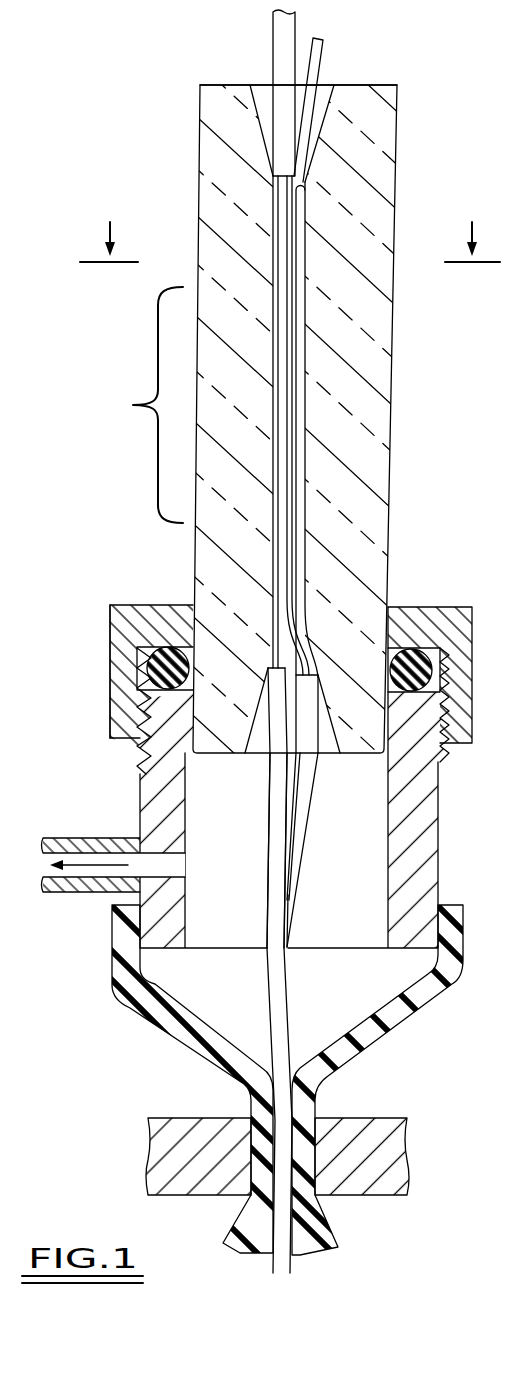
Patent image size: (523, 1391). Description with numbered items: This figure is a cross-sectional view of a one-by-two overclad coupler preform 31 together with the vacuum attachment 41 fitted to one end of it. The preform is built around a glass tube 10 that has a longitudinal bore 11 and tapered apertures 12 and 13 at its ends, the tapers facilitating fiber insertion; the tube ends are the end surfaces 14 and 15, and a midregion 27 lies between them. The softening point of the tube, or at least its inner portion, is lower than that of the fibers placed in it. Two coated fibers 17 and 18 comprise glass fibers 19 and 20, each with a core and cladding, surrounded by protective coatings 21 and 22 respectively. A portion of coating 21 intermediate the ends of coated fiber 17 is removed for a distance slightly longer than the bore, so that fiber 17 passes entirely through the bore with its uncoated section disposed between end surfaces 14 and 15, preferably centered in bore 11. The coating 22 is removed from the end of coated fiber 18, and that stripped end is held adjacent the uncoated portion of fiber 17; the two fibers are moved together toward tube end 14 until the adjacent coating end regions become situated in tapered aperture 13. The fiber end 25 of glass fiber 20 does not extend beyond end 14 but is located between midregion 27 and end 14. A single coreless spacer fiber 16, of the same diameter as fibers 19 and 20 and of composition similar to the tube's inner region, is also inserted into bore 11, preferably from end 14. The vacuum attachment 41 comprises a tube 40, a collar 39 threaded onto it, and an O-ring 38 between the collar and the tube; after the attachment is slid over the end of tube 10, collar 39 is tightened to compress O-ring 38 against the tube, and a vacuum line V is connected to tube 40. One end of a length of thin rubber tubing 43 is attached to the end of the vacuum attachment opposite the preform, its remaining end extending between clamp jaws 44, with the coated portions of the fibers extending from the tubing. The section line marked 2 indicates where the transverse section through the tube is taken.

The tube 10 is at (398, 150).
The preform 31 is at (195, 143).
The tube end 14 is at (213, 85).
The tapered aperture 12 is at (333, 92).
The coated fiber 17 is at (266, 25).
The protective coating 21 is at (287, 30).
The spacer fiber 16 is at (322, 50).
The fiber end 25 is at (307, 190).
The longitudinal bore 11 is at (300, 290).
The glass fiber 19 is at (273, 408).
The glass fiber 20 is at (298, 408).
The midregion 27 is at (141, 405).
The section line 2- 2 is at (290, 263).
The collar 39 is at (150, 605).
The vacuum attachment 41 is at (102, 638).
The O-ring 38 is at (417, 607).
The tube 40 is at (140, 785).
The vacuum port V is at (112, 838).
The tube end 15 is at (225, 753).
The tapered aperture 13 is at (331, 745).
The protective coating 22 is at (300, 866).
The coated fiber 18 is at (288, 895).
The rubber tubing 43 is at (380, 1045).
The clamp jaws 44 is at (148, 1148).